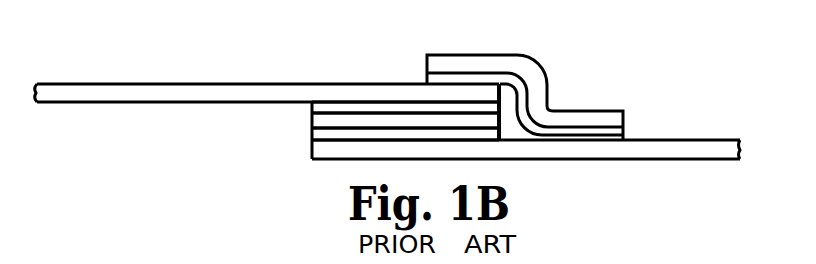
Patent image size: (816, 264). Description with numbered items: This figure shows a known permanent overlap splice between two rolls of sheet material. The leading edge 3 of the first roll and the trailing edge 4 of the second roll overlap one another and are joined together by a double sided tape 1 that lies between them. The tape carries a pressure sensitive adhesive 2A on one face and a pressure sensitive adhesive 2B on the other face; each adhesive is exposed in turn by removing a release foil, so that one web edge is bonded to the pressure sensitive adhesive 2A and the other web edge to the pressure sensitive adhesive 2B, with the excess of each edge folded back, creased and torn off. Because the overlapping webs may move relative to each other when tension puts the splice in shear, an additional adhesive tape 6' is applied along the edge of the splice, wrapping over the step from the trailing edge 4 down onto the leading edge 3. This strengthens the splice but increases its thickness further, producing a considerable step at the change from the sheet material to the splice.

The double sided tape 1 is at (331, 121).
The pressure sensitive adhesive 2A is at (322, 135).
The pressure sensitive adhesive 2B is at (357, 108).
The leading edge 3 is at (693, 150).
The trailing edge 4 is at (130, 96).
The additional adhesive tape 6' is at (525, 75).